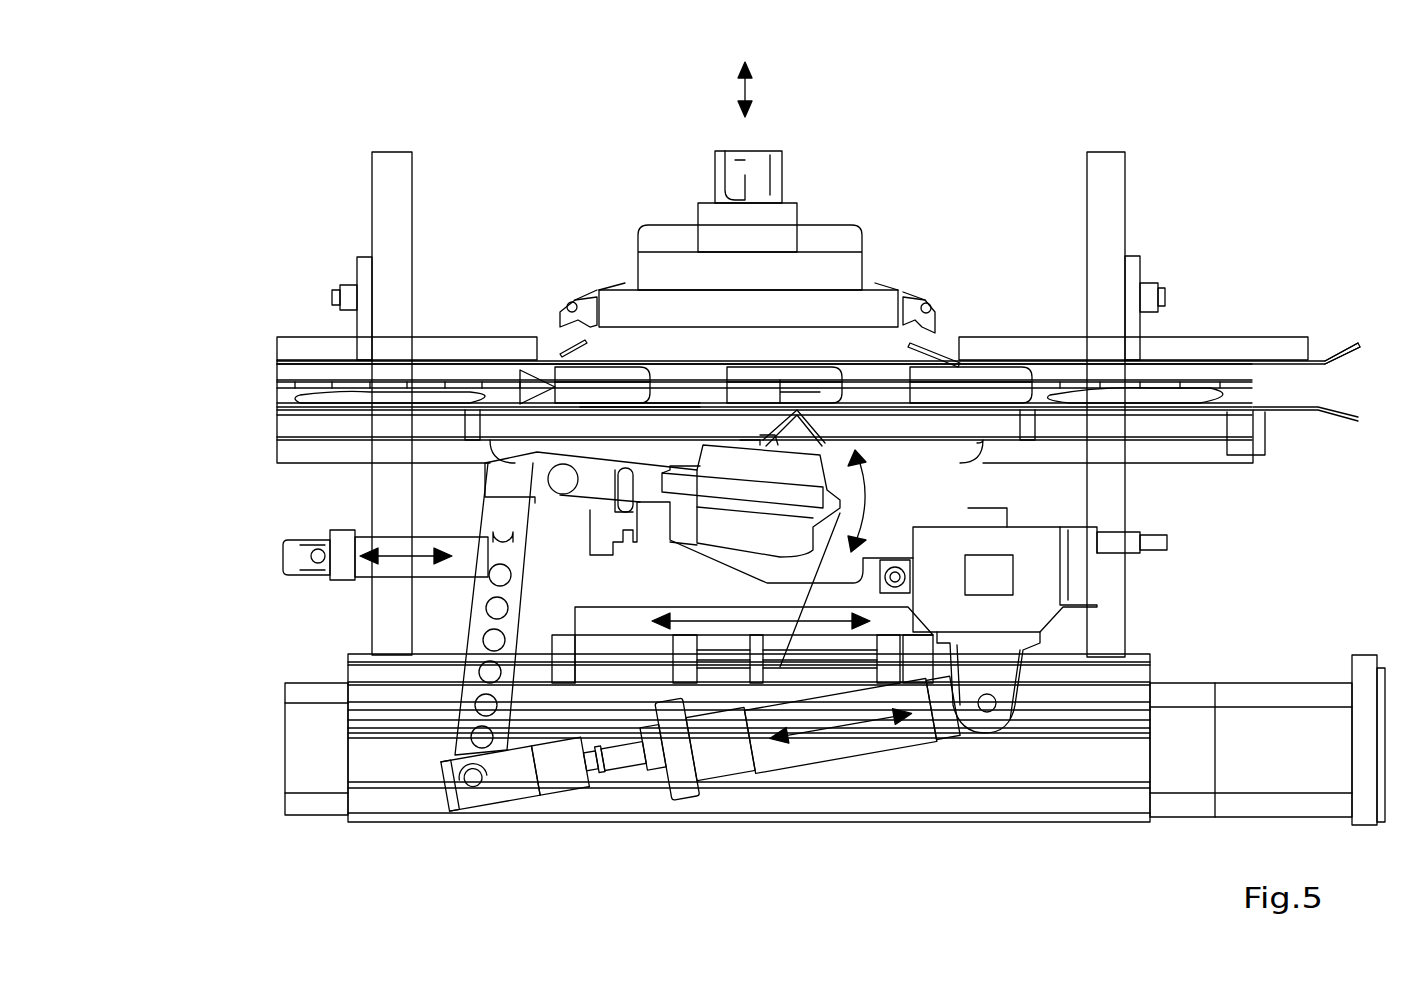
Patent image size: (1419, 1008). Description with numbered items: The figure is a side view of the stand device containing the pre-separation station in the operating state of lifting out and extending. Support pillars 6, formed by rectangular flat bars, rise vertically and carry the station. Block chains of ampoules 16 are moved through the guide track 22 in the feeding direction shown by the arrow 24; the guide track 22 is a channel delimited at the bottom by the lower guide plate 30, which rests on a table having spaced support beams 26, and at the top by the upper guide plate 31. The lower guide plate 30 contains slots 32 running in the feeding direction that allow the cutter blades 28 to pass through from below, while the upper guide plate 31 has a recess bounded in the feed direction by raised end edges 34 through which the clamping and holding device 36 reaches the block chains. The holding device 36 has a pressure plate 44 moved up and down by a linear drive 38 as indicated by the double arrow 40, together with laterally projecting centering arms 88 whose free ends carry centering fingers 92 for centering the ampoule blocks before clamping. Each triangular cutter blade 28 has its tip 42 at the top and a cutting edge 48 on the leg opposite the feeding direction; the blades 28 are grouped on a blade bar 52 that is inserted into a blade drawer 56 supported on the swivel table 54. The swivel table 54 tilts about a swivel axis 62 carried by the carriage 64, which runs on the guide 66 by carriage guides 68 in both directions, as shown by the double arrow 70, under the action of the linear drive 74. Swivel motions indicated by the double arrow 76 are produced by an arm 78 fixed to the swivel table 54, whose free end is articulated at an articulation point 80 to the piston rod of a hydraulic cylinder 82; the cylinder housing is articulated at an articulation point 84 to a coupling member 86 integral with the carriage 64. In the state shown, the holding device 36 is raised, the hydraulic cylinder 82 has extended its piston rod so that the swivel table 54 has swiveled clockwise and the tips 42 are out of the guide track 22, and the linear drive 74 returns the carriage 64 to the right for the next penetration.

The support pillars 6 is at (372, 205).
The ampoules 16 is at (600, 375).
The guide track 22 is at (1182, 370).
The arrow 24 is at (505, 378).
The support beams 26 is at (1195, 430).
The cutter blades 28 is at (810, 425).
The lower guide plate 30 is at (282, 345).
The upper guide plate 31 is at (1325, 355).
The slots 32 is at (590, 408).
The raised end edges 34 is at (565, 345).
The clamping and holding device 36 is at (875, 222).
The linear drive 38 is at (727, 228).
The double arrow 40 is at (752, 75).
The tip 42 is at (800, 380).
The pressure plate 44 is at (862, 308).
The cutting edge 48 is at (760, 405).
The blade bar 52 is at (807, 605).
The swivel table 54 is at (608, 482).
The blade drawer 56 is at (693, 457).
The swivel axis 62 is at (552, 470).
The carriage 64 is at (765, 650).
The guide 66 is at (1105, 695).
The carriage guides 68 is at (612, 650).
The double arrow 70 is at (730, 600).
The linear drive 74 is at (1203, 732).
The double arrow 76 is at (865, 500).
The arm 78 is at (495, 625).
The articulation point 80 is at (495, 785).
The hydraulic cylinder 82 is at (835, 738).
The articulation point 84 is at (1003, 710).
The coupling member 86 is at (1030, 580).
The centering arms 88 is at (594, 297).
The centering fingers 92 is at (565, 310).